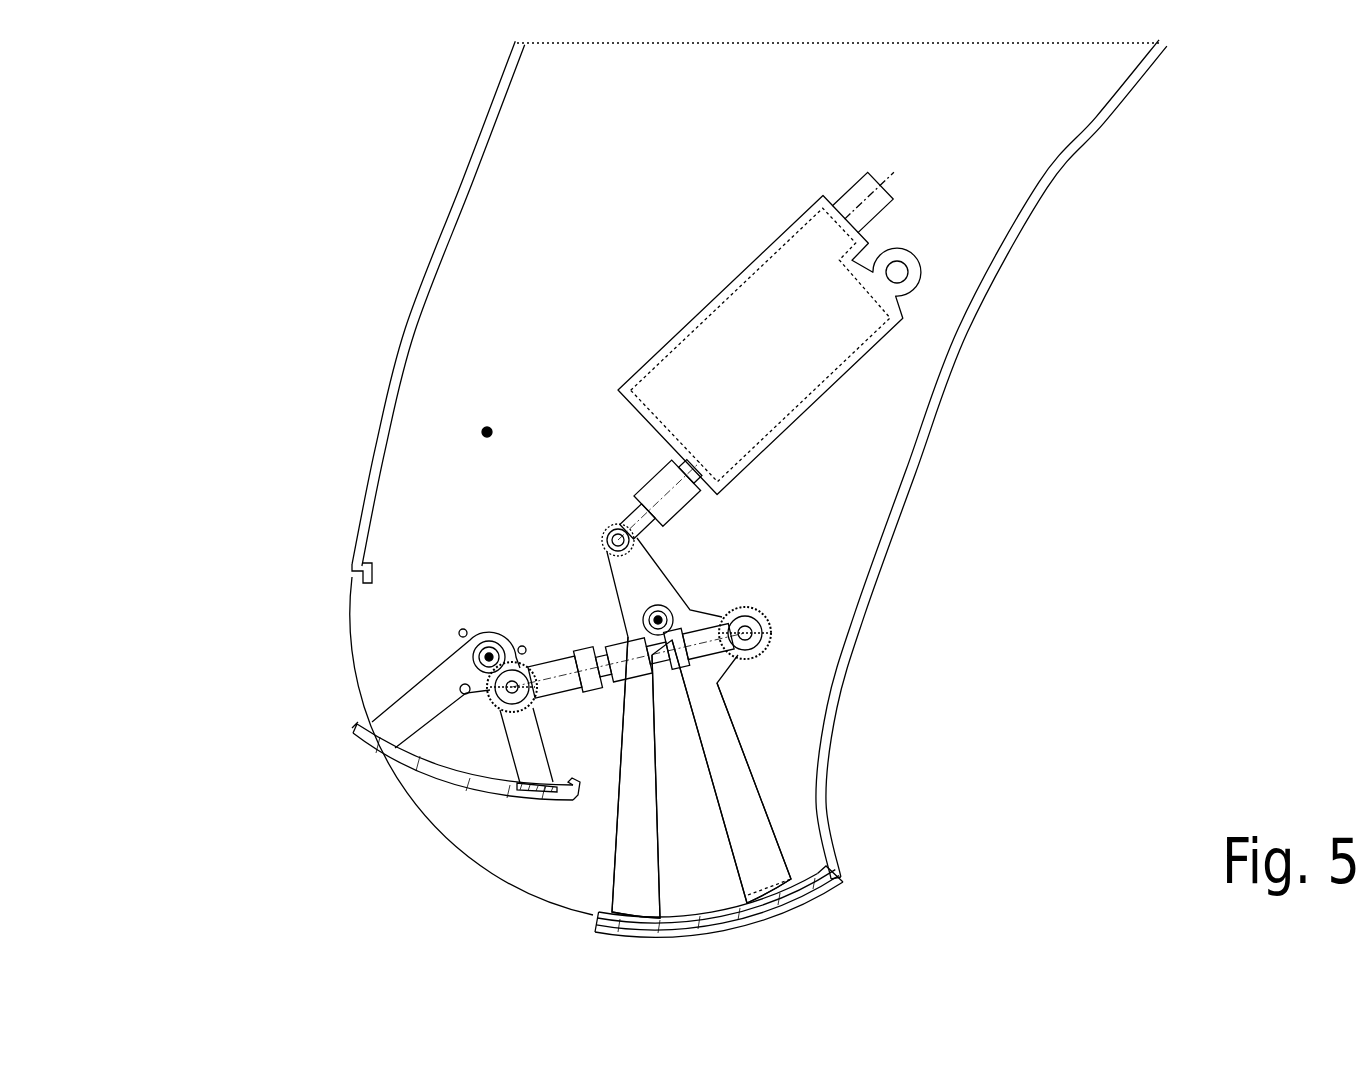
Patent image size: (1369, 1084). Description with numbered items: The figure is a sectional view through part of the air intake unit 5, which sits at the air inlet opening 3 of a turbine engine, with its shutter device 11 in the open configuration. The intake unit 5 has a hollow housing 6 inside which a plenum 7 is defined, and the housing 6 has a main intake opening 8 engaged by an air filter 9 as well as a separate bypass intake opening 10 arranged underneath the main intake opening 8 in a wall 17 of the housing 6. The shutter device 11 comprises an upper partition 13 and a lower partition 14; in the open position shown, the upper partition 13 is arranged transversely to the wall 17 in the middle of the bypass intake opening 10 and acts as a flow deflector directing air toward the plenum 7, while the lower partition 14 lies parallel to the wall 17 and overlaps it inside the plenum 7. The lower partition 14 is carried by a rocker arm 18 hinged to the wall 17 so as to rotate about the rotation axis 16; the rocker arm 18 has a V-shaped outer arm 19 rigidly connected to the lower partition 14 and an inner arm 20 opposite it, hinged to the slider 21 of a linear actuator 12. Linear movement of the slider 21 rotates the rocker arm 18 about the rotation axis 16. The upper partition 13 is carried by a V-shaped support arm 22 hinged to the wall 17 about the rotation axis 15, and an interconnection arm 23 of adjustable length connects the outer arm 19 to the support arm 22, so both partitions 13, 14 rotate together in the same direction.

The air inlet opening 3 is at (160, 291).
The air intake unit 5 is at (190, 813).
The hollow housing 6 is at (1206, 439).
The plenum 7 is at (482, 432).
The main intake opening 8 is at (470, 172).
The air filter 9 is at (492, 103).
The bypass intake opening 10 is at (582, 927).
The shutter device 11 is at (370, 895).
The actuator 12 is at (750, 358).
The upper partition 13 is at (452, 782).
The lower partition 14 is at (705, 918).
The rotation axis 15 is at (490, 652).
The rotation axis 16 is at (645, 617).
The wall 17 is at (1046, 183).
The rocker arm 18 is at (786, 605).
The outer arm 19 is at (740, 803).
The inner arm 20 is at (642, 570).
The slider 21 is at (660, 482).
The support arm 22 is at (422, 695).
The interconnection arm 23 is at (553, 676).